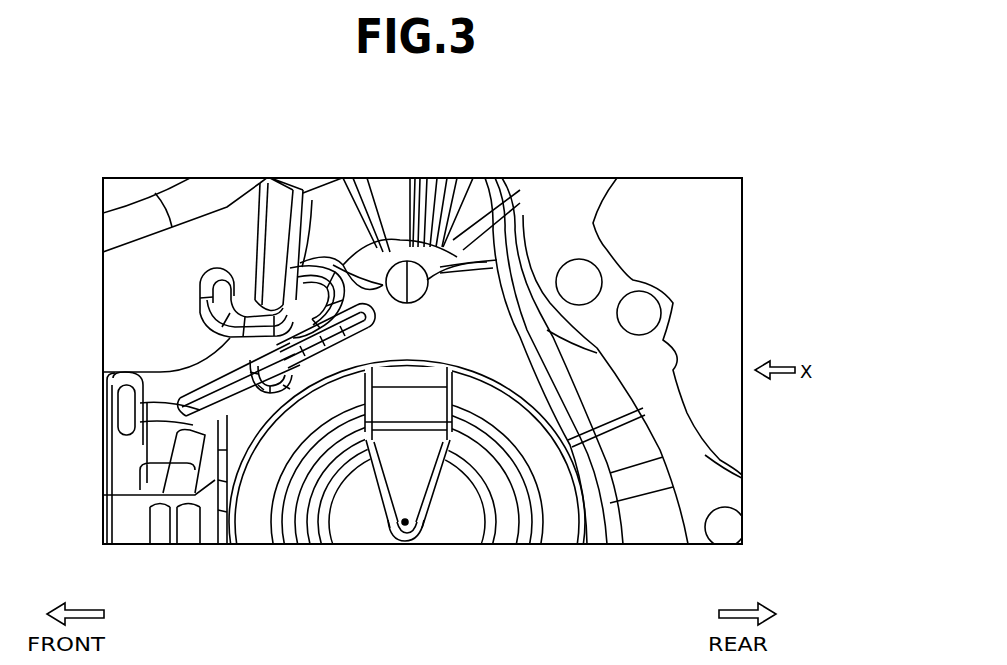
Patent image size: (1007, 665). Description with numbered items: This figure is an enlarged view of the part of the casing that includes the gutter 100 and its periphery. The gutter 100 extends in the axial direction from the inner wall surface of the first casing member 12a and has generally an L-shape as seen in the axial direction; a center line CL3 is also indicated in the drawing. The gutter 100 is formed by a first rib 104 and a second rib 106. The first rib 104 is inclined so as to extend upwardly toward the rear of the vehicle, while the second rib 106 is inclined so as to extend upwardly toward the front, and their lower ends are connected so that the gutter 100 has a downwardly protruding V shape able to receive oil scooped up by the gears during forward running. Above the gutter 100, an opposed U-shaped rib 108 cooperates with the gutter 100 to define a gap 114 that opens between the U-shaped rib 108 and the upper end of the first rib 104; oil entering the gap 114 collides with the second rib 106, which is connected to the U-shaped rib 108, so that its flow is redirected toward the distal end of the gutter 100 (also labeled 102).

The U-shaped rib 108 is at (245, 318).
The gap 114 is at (297, 327).
The first casing member 12a is at (615, 221).
The second rib 106 is at (265, 350).
The gutter 100 is at (385, 342).
The rib 102 is at (322, 336).
The first rib 104 is at (318, 352).
The center line CL3 is at (404, 526).